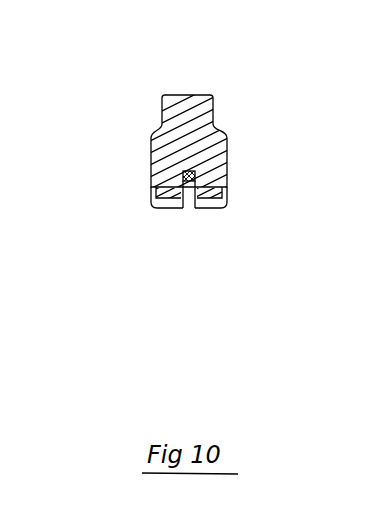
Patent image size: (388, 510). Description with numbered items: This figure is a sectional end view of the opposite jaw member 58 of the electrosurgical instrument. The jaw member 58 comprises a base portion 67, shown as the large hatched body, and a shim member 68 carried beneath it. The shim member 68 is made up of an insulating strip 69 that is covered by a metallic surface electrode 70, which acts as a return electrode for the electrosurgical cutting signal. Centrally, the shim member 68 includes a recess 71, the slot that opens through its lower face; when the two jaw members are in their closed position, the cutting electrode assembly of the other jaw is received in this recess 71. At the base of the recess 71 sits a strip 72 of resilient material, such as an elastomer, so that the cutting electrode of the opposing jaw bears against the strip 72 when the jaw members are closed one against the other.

The jaw member 58 is at (142, 138).
The base portion 67 is at (198, 128).
The shim member 68 is at (245, 199).
The insulating strip 69 is at (172, 197).
The metallic surface electrode 70 is at (215, 208).
The central recess 71 is at (188, 200).
The strip of resilient material 72 is at (197, 177).